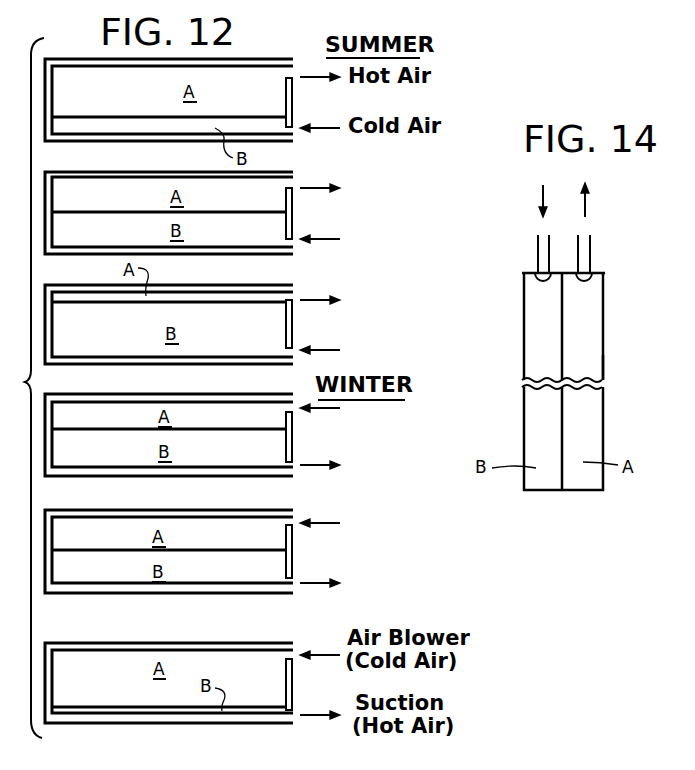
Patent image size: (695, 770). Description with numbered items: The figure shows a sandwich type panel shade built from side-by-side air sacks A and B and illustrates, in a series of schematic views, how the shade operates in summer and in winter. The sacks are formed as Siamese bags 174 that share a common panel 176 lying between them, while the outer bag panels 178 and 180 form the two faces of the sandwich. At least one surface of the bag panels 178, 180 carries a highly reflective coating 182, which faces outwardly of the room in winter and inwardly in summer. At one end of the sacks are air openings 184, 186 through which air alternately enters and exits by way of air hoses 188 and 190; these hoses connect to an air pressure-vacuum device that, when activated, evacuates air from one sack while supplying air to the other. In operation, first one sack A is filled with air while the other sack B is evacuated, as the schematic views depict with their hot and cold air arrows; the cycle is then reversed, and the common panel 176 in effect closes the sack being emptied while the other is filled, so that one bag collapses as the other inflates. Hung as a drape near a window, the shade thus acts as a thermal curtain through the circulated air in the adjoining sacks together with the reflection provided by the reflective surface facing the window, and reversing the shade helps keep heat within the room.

In FIG. 14, the bags 174 is at (524, 425).
In FIG. 12, the common panel 176 is at (124, 117).
In FIG. 14, the common panel 176 is at (562, 343).
In FIG. 12, the bag panel 178 is at (243, 62).
In FIG. 14, the bag panel 178 is at (524, 315).
In FIG. 12, the bag panel 180 is at (112, 137).
In FIG. 14, the bag panel 180 is at (604, 318).
In FIG. 14, the reflective coating 182 is at (605, 362).
In FIG. 14, the air opening 184 is at (604, 278).
In FIG. 14, the air opening 186 is at (524, 278).
In FIG. 14, the air hose 188 is at (590, 248).
In FIG. 14, the air hose 190 is at (538, 248).